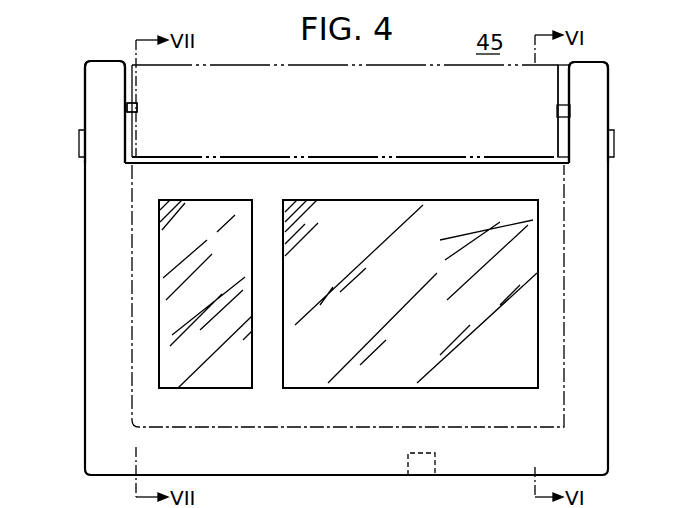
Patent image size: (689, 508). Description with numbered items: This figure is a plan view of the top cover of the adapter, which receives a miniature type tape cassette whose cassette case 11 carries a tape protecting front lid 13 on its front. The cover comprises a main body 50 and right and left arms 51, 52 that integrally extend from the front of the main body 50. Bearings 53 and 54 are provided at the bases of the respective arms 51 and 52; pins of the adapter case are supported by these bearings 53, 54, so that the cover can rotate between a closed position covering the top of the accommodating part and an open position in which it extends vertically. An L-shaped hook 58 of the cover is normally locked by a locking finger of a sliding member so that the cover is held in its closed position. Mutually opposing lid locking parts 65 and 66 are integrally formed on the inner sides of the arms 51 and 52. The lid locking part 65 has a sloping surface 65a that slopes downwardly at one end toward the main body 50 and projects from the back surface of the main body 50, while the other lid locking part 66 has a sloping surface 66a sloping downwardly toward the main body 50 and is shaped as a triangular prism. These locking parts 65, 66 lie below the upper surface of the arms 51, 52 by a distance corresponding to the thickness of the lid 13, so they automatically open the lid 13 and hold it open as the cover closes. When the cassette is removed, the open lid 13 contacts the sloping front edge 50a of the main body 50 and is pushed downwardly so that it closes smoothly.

The cassette case 11 is at (132, 312).
The tape protecting front lid 13 is at (290, 63).
The main body 50 is at (604, 372).
The front edge 50a is at (378, 161).
The right arm 51 is at (603, 78).
The left arm 52 is at (87, 79).
The bearing 53 is at (614, 144).
The bearing 54 is at (78, 145).
The L-shaped hook 58 is at (437, 466).
The lid locking part 65 is at (557, 82).
The sloping surface 65a is at (558, 112).
The lid locking part 66 is at (137, 106).
The sloping surface 66a is at (137, 110).